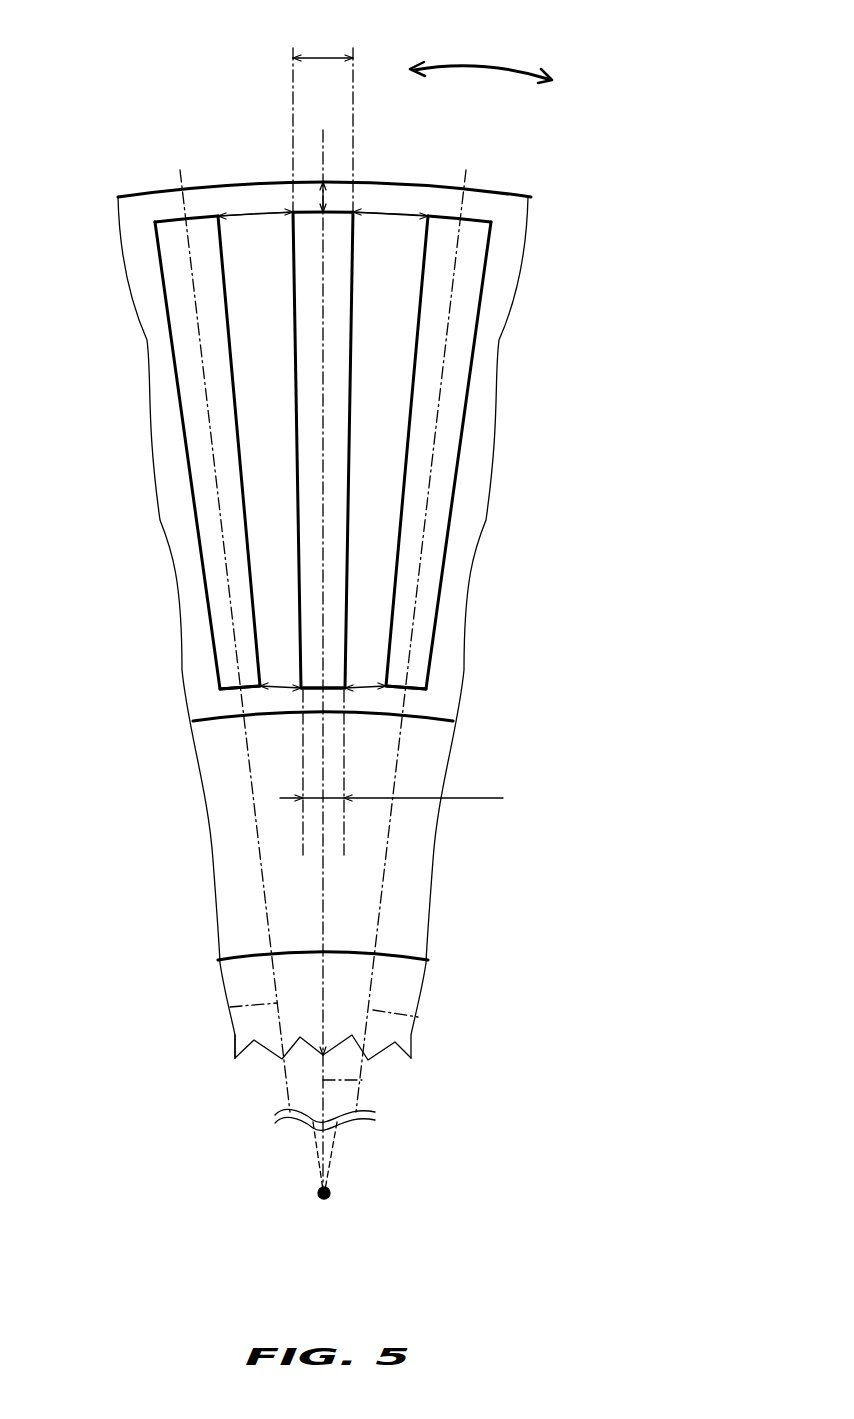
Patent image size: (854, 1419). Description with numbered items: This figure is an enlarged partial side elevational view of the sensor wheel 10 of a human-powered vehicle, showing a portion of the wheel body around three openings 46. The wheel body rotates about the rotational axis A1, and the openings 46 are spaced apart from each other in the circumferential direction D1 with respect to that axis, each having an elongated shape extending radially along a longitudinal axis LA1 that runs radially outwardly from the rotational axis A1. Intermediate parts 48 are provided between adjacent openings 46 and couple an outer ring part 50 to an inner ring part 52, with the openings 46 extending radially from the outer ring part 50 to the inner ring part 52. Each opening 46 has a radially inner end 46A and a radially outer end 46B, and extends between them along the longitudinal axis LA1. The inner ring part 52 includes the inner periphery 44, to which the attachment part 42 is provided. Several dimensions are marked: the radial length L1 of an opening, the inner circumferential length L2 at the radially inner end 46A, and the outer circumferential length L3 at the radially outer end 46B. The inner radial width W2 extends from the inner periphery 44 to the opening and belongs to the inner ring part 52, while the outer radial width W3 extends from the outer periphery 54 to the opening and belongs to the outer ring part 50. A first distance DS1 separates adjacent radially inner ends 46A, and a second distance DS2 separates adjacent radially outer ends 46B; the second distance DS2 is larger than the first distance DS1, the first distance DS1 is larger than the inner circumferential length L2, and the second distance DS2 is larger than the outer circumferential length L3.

The sensor wheel 10 is at (580, 127).
The attachment part 42 is at (257, 1052).
The inner periphery 44 is at (253, 1032).
The openings 46 is at (230, 377).
The radially inner end 46A is at (233, 690).
The radially outer end 46B is at (170, 222).
The intermediate parts 48 is at (240, 458).
The outer ring part 50 is at (197, 200).
The inner ring part 52 is at (228, 802).
The outer periphery 54 is at (133, 197).
The rotational axis A1 is at (332, 1192).
The circumferential direction D1 is at (478, 66).
The radial length L1 is at (323, 272).
The circumferential length L2 is at (391, 772).
The outer circumferential length L3 is at (323, 120).
The inner radial width W2 is at (323, 897).
The outer radial width W3 is at (323, 200).
The first distance DS1 is at (275, 717).
The second distance DS2 is at (253, 214).
The longitudinal axis LA1 is at (230, 1007).